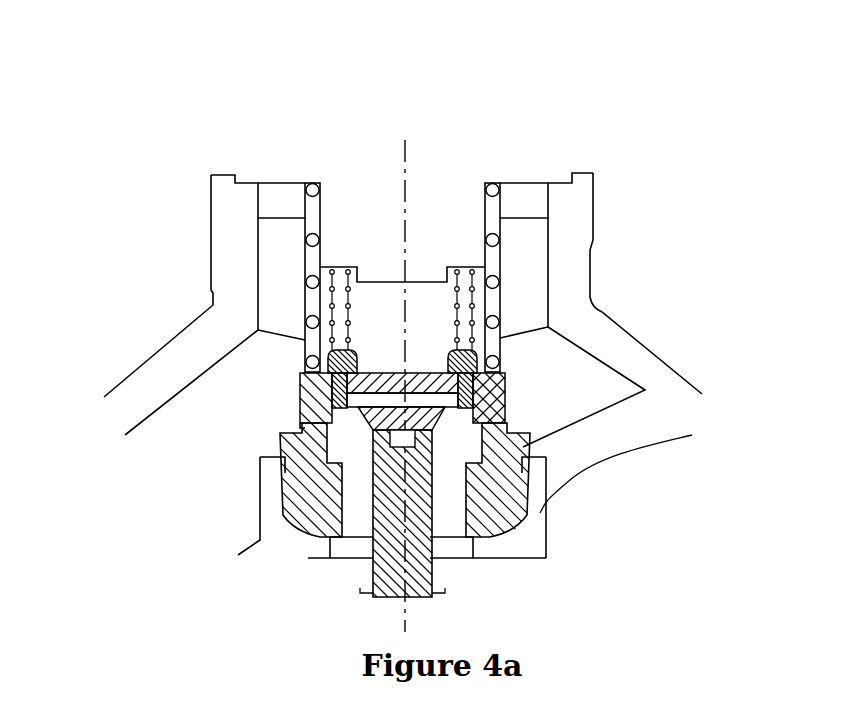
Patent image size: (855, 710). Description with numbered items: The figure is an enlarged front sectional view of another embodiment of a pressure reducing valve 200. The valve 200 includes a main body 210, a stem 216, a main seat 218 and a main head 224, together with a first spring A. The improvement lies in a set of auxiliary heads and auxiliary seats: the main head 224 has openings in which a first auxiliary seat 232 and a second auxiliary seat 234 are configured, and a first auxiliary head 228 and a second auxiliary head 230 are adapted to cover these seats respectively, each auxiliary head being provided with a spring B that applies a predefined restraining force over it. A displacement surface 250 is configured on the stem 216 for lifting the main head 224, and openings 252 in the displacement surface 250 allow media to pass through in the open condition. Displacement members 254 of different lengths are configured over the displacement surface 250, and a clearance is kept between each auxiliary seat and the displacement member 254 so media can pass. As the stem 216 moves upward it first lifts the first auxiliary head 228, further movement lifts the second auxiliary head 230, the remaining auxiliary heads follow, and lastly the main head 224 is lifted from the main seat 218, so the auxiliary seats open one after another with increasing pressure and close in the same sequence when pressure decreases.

The pressure reducing valve 200 is at (578, 118).
The main body 210 is at (652, 308).
The stem 216 is at (373, 510).
The main seat 218 is at (282, 440).
The main head 224 is at (502, 386).
The first auxiliary head 228 is at (332, 352).
The second auxiliary head 230 is at (502, 387).
The first auxiliary seat 232 is at (328, 360).
The second auxiliary seat 234 is at (528, 447).
The displacement surface 250 is at (347, 410).
The openings 252 is at (340, 412).
The displacement members 254 is at (335, 378).
The first spring A is at (500, 262).
The spring B is at (352, 266).